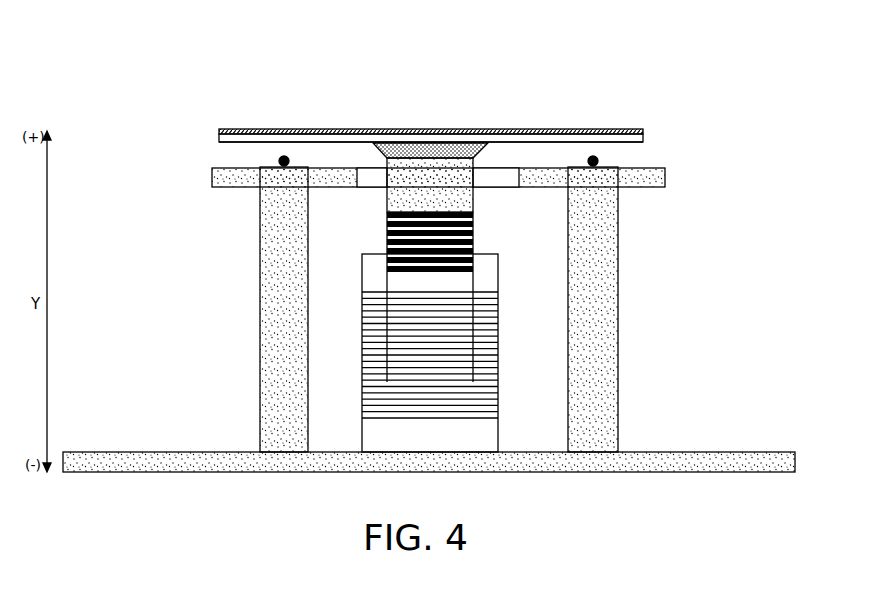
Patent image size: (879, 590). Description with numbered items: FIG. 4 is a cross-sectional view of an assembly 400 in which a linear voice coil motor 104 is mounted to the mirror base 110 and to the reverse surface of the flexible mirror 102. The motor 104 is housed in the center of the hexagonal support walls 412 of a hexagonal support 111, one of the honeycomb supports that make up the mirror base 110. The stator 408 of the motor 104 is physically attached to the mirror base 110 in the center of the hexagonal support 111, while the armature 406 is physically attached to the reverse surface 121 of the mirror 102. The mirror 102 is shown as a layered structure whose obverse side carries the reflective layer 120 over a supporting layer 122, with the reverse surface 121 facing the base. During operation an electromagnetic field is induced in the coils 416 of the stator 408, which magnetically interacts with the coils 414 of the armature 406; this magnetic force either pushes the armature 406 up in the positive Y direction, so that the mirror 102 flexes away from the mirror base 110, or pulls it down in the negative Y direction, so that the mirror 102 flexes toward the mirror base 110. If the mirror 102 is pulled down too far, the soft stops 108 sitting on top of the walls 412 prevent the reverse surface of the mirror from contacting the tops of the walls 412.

The electronic device assembly 400 is at (357, 73).
The flexible mirror 102 is at (435, 128).
The reflective layer 120 is at (606, 128).
The substrate layer 122 is at (646, 135).
The reverse surface 121 is at (222, 144).
The armature 406 is at (475, 162).
The soft stops 108 is at (603, 162).
The hexagonal support 111 is at (640, 325).
The coils of armature 414 is at (476, 218).
The linear voice coil motor 104 is at (463, 329).
The coils of stator 416 is at (501, 293).
The hexagonal support walls 412 is at (258, 377).
The stator 408 is at (501, 432).
The mirror base 110 is at (750, 450).